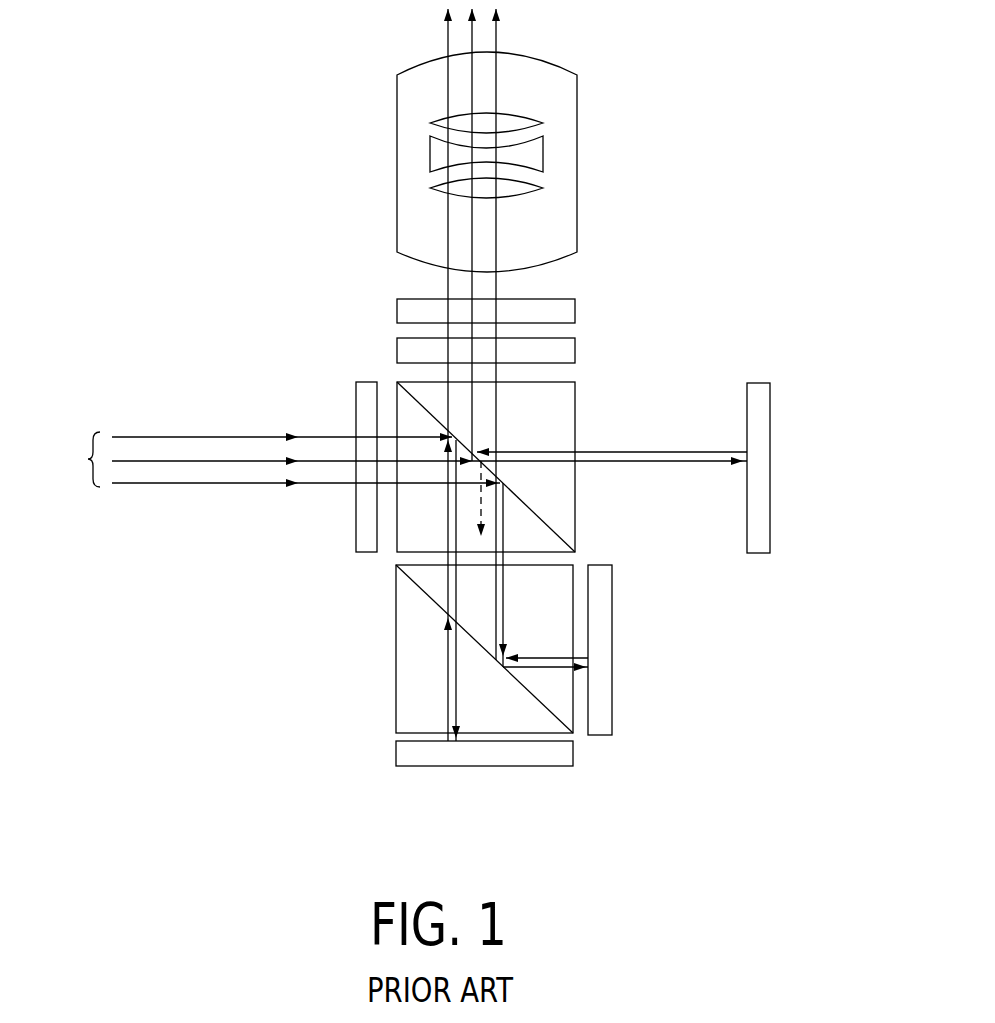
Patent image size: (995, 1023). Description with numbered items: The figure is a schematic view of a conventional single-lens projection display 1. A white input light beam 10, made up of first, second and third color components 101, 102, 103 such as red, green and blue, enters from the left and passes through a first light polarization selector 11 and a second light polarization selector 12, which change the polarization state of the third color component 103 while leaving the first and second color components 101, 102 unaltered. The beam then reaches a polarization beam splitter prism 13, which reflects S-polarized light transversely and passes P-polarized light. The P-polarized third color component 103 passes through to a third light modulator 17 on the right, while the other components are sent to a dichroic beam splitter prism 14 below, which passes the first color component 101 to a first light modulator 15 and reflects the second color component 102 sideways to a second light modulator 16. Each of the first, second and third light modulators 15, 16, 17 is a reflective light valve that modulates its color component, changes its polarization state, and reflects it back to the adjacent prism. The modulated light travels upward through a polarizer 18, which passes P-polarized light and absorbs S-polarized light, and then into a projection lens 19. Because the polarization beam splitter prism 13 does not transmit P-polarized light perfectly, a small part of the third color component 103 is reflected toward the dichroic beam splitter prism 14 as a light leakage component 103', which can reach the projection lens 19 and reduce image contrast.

The single-lens projection display 1 is at (270, 280).
The input light beam 10 is at (76, 459).
The first color component 101 is at (180, 435).
The second color component 102 is at (160, 483).
The third color component 103 is at (429, 288).
The light leakage component 103' is at (585, 518).
The first light polarization selector 11 is at (355, 522).
The second light polarization selector 12 is at (567, 348).
The polarization beam splitter prism 13 is at (567, 513).
The dichroic beam splitter prism 14 is at (398, 691).
The first light modulator 15 is at (531, 753).
The second light modulator 16 is at (600, 712).
The third light modulator 17 is at (760, 523).
The polarizer 18 is at (563, 310).
The projection lens 19 is at (562, 150).